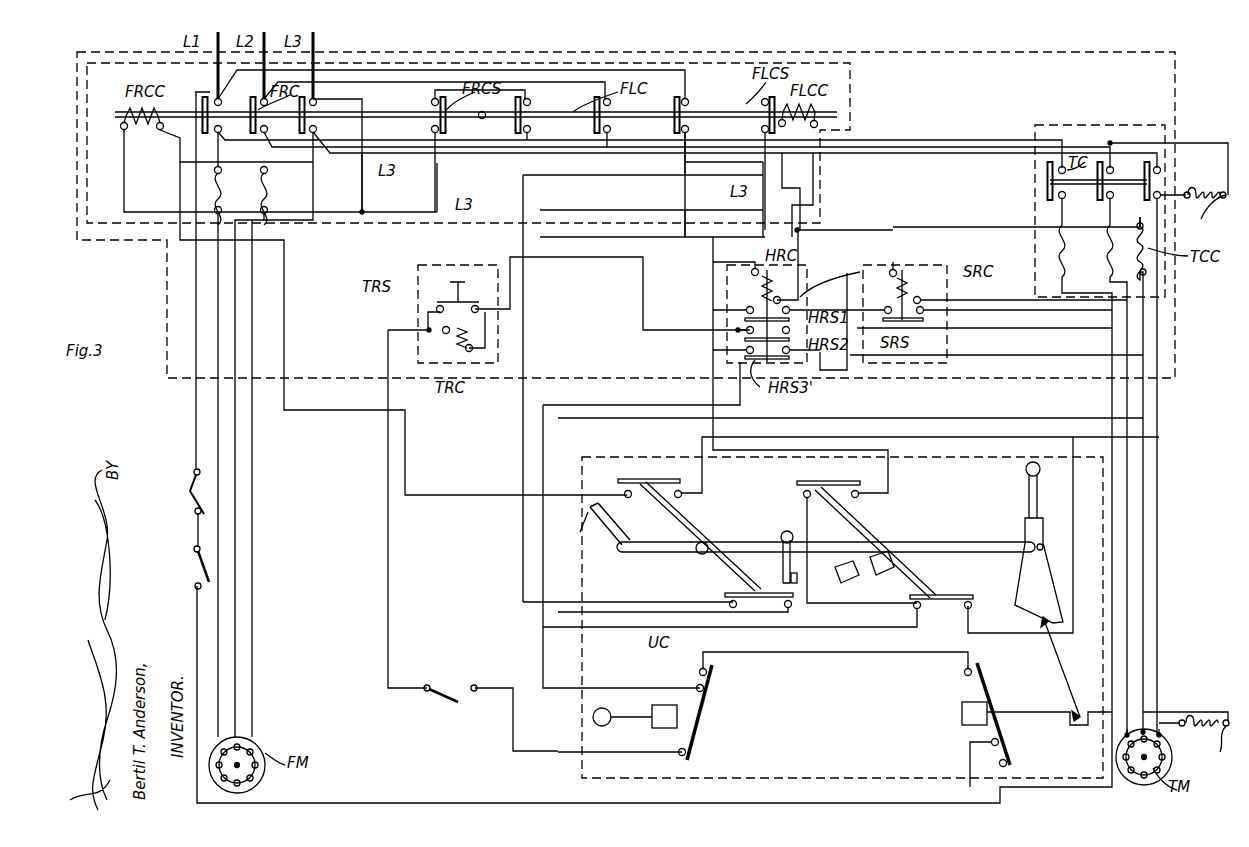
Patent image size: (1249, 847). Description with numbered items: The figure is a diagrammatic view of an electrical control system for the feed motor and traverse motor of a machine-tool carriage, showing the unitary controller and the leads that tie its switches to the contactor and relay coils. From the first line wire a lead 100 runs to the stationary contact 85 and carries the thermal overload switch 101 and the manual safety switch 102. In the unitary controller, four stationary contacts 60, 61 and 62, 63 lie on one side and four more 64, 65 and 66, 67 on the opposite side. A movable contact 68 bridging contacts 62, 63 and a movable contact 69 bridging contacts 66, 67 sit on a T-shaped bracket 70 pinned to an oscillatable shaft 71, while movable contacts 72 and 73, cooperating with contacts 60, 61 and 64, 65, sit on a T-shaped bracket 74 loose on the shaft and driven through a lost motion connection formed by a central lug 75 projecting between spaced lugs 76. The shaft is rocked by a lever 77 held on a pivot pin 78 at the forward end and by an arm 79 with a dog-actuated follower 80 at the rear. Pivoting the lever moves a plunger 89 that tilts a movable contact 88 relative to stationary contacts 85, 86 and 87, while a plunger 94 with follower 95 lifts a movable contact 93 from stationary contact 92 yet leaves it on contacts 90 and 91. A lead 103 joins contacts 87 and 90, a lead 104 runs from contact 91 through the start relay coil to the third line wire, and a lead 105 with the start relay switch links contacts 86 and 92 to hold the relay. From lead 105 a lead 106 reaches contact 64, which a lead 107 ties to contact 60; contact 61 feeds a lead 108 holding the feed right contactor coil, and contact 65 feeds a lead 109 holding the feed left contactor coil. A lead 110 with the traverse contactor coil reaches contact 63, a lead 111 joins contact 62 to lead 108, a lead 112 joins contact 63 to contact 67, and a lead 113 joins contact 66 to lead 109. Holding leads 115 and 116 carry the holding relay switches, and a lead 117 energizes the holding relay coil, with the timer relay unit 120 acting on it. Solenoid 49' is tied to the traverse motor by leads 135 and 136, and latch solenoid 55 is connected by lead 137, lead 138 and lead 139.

The lead 100 is at (180, 298).
The thermal overload switch 101 is at (194, 474).
The manual safety switch 102 is at (194, 548).
The lead 103 is at (843, 660).
The lead 104 is at (844, 272).
The lead 105 is at (1102, 325).
The lead 106 is at (734, 630).
The lead 107 is at (830, 606).
The lead 108 is at (312, 163).
The lead 109 is at (437, 187).
The lead 110 is at (954, 224).
The lead 111 is at (282, 267).
The lead 112 is at (602, 466).
The lead 113 is at (523, 192).
The lead 115 is at (734, 309).
The lead 116 is at (738, 330).
The lead 117 is at (423, 325).
The relay unit 120 is at (498, 264).
The lead 135 is at (1180, 711).
The lead 136 is at (1173, 725).
The lead 137 is at (1201, 222).
The lead 138 is at (1199, 143).
The lead 139 is at (680, 186).
The solenoid 49' is at (1213, 750).
The solenoid 55 is at (1205, 206).
The stationary contact 60 is at (803, 494).
The stationary contact 61 is at (858, 497).
The stationary contact 62 is at (624, 494).
The stationary contact 63 is at (681, 495).
The stationary contact 64 is at (915, 605).
The stationary contact 65 is at (970, 606).
The stationary contact 66 is at (727, 596).
The stationary contact 67 is at (794, 608).
The movable contact 68 is at (668, 474).
The movable contact 69 is at (774, 587).
The T-shaped bracket 70 is at (702, 526).
The oscillatable shaft 71 is at (660, 551).
The movable contact 72 is at (830, 481).
The movable contact 73 is at (957, 596).
The T-shaped bracket 74 is at (876, 528).
The lug 75 is at (791, 578).
The spaced lugs 76 is at (848, 556).
The lever 77 is at (1029, 496).
The pivot pin 78 is at (1043, 551).
The arm 79 is at (610, 532).
The follower 80 is at (610, 519).
The stationary contact 85 is at (1006, 763).
The stationary contact 86 is at (1000, 742).
The stationary contact 87 is at (964, 672).
The movable contact 88 is at (988, 690).
The plunger 89 is at (1033, 712).
The stationary contact 90 is at (707, 672).
The stationary contact 91 is at (706, 690).
The stationary contact 92 is at (696, 737).
The movable contact 93 is at (704, 714).
The plunger 94 is at (632, 730).
The follower 95 is at (603, 712).